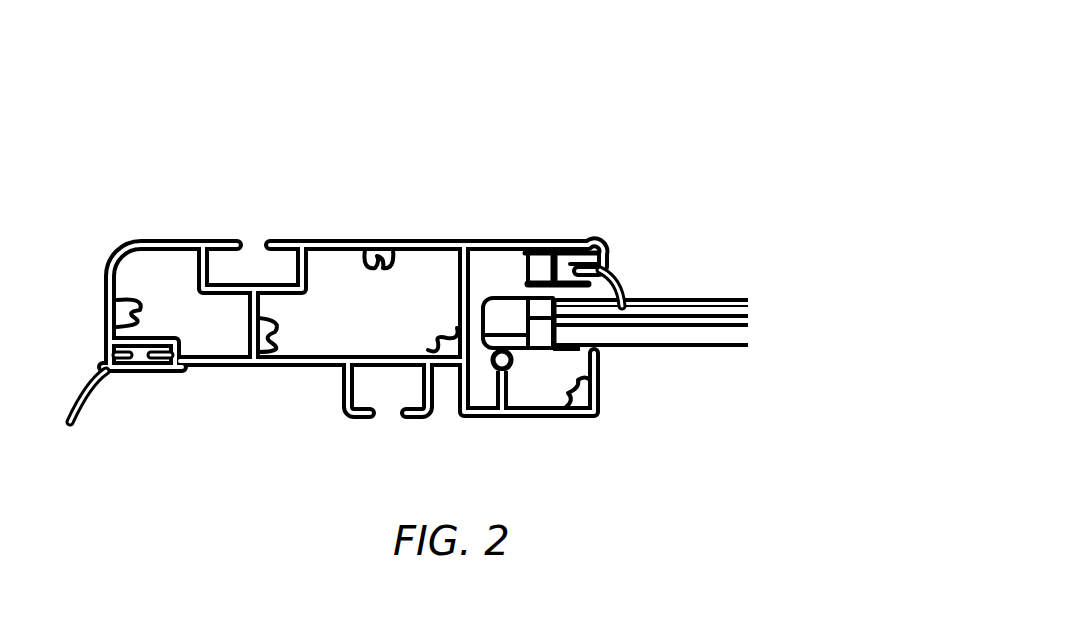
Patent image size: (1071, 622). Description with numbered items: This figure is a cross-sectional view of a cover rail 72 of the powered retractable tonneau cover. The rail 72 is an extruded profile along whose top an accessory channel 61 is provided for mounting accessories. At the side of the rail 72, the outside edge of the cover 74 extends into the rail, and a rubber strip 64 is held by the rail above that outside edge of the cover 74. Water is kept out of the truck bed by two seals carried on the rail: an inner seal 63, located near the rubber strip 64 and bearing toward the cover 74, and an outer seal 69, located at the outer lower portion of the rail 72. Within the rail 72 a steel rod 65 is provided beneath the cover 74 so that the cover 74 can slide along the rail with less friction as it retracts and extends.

The accessory channel 61 is at (253, 263).
The inner seal 63 is at (612, 279).
The rubber strip 64 is at (555, 290).
The steel rod 65 is at (506, 374).
The outer seal 69 is at (87, 367).
The cover rail 72 is at (186, 112).
The cover 74 is at (704, 318).